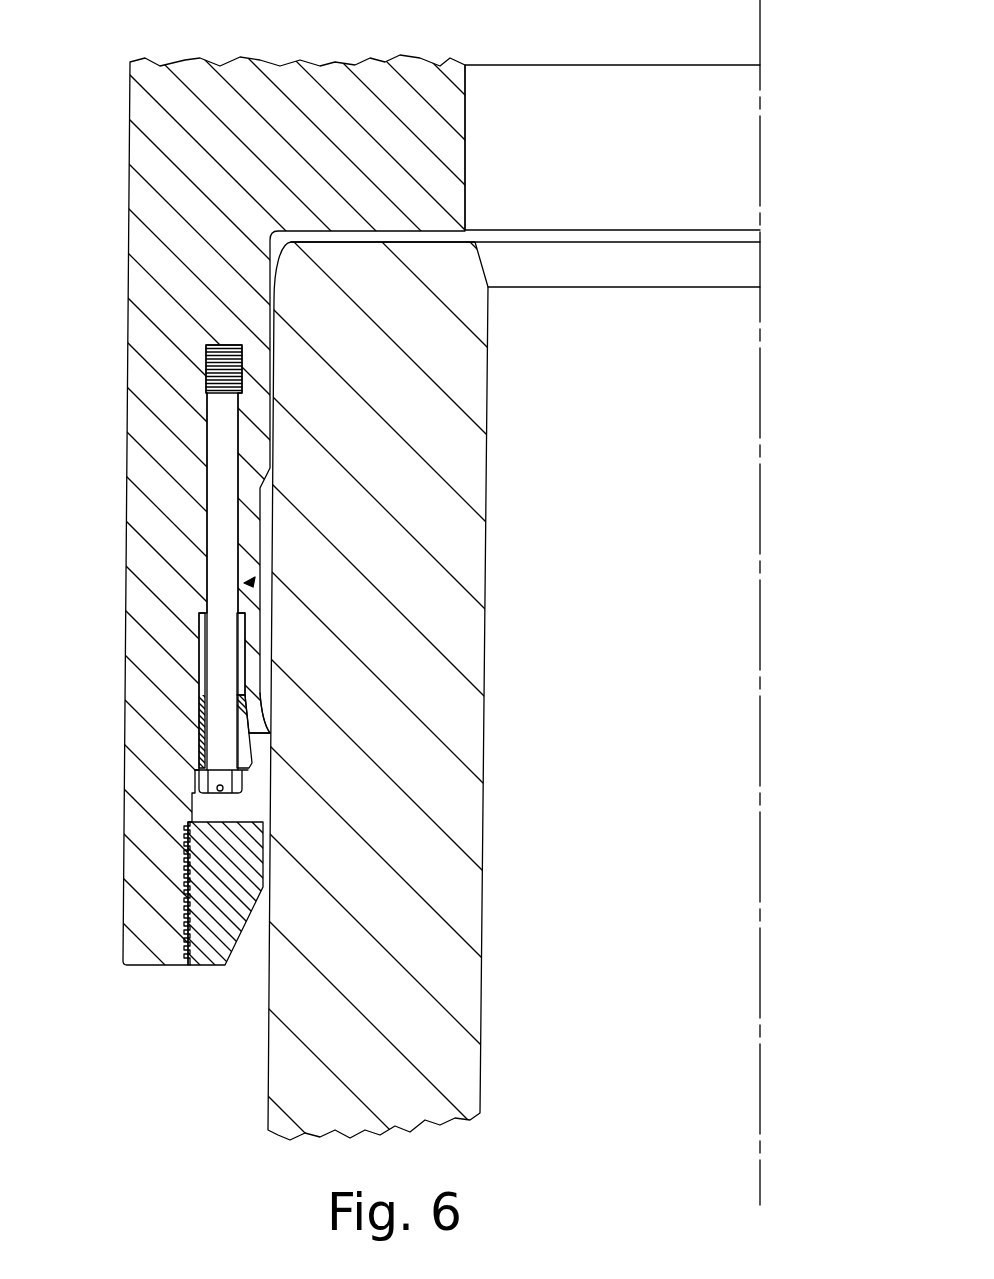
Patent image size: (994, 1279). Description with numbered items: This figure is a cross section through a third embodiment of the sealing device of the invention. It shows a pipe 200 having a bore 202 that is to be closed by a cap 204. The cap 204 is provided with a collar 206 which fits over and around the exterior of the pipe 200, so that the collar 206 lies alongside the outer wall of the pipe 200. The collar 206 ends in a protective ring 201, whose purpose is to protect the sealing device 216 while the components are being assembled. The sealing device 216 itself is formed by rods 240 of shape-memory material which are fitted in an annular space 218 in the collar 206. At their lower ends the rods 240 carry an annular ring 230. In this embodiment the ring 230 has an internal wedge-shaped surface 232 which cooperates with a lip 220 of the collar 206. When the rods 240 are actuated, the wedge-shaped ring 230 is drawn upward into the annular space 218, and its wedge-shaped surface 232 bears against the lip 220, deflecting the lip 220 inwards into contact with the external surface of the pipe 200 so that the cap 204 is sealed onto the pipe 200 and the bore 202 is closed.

The pipe 200 is at (460, 560).
The protective ring 201 is at (210, 948).
The bore 202 is at (720, 518).
The cap 204 is at (603, 115).
The collar 206 is at (155, 567).
The sealing device 216 is at (248, 582).
The annular space 218 is at (197, 653).
The lip 220 is at (268, 707).
The annular ring 230 is at (247, 769).
The internal wedge-shaped surface 232 is at (253, 757).
The shape-memory material rods 240 is at (223, 518).